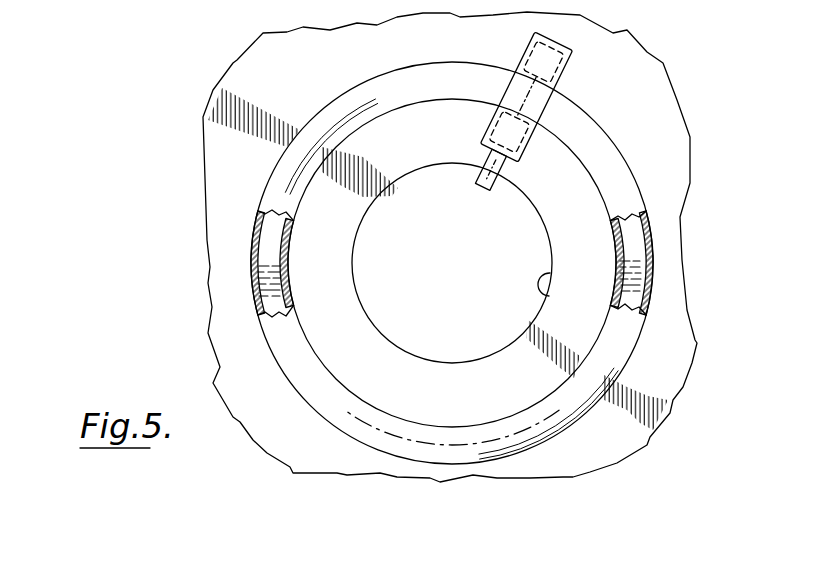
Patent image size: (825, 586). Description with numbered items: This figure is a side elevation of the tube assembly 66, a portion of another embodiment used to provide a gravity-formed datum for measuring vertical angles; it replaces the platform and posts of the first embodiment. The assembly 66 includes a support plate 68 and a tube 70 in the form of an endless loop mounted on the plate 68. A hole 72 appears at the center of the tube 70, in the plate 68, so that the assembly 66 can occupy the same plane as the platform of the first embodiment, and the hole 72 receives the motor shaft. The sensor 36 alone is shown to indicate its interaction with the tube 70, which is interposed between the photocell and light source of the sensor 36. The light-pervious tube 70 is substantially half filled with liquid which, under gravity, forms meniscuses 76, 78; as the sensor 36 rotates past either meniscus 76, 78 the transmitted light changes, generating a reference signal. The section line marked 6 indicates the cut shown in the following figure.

The tube assembly 66 is at (176, 104).
The support plate 68 is at (658, 92).
The tube 70 is at (633, 175).
The hole 72 is at (538, 296).
The meniscus 76 is at (265, 262).
The meniscus 78 is at (643, 240).
The sensor 36 is at (517, 50).
The section line for FIG. 6 is at (382, 418).